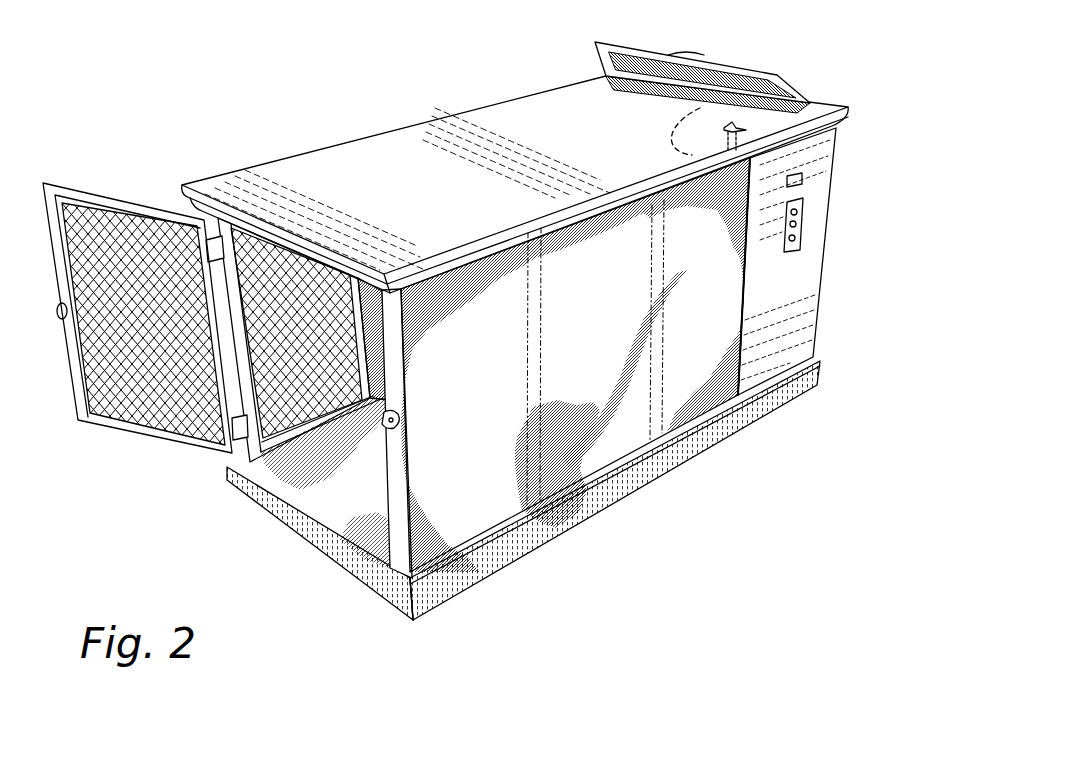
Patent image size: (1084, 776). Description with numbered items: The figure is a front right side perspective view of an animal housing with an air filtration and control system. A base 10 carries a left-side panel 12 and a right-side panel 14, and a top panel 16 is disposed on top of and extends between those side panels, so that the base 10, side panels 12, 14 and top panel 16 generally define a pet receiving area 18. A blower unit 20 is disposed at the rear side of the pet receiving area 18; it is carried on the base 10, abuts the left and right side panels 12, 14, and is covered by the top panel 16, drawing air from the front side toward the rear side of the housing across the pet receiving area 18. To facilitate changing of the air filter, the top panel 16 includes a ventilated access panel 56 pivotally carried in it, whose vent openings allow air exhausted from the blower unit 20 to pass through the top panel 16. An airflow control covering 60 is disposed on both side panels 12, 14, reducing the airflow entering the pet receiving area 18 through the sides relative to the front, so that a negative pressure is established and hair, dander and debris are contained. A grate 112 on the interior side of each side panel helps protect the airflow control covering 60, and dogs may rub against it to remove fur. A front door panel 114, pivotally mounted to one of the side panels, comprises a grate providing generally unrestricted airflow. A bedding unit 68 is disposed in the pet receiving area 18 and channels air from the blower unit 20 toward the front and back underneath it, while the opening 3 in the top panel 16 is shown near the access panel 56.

The power connector opening 3 is at (837, 147).
The base 10 is at (738, 417).
The left-side panel 12 is at (257, 442).
The right-side panel 14 is at (392, 523).
The top panel 16 is at (537, 128).
The pet receiving area 18 is at (348, 443).
The blower unit 20 is at (797, 293).
The ventilated access panel 56 is at (737, 68).
The airflow control covering 60 is at (593, 377).
The bedding unit 68 is at (353, 517).
The grate 112 is at (277, 262).
The front door panel 114 is at (110, 237).